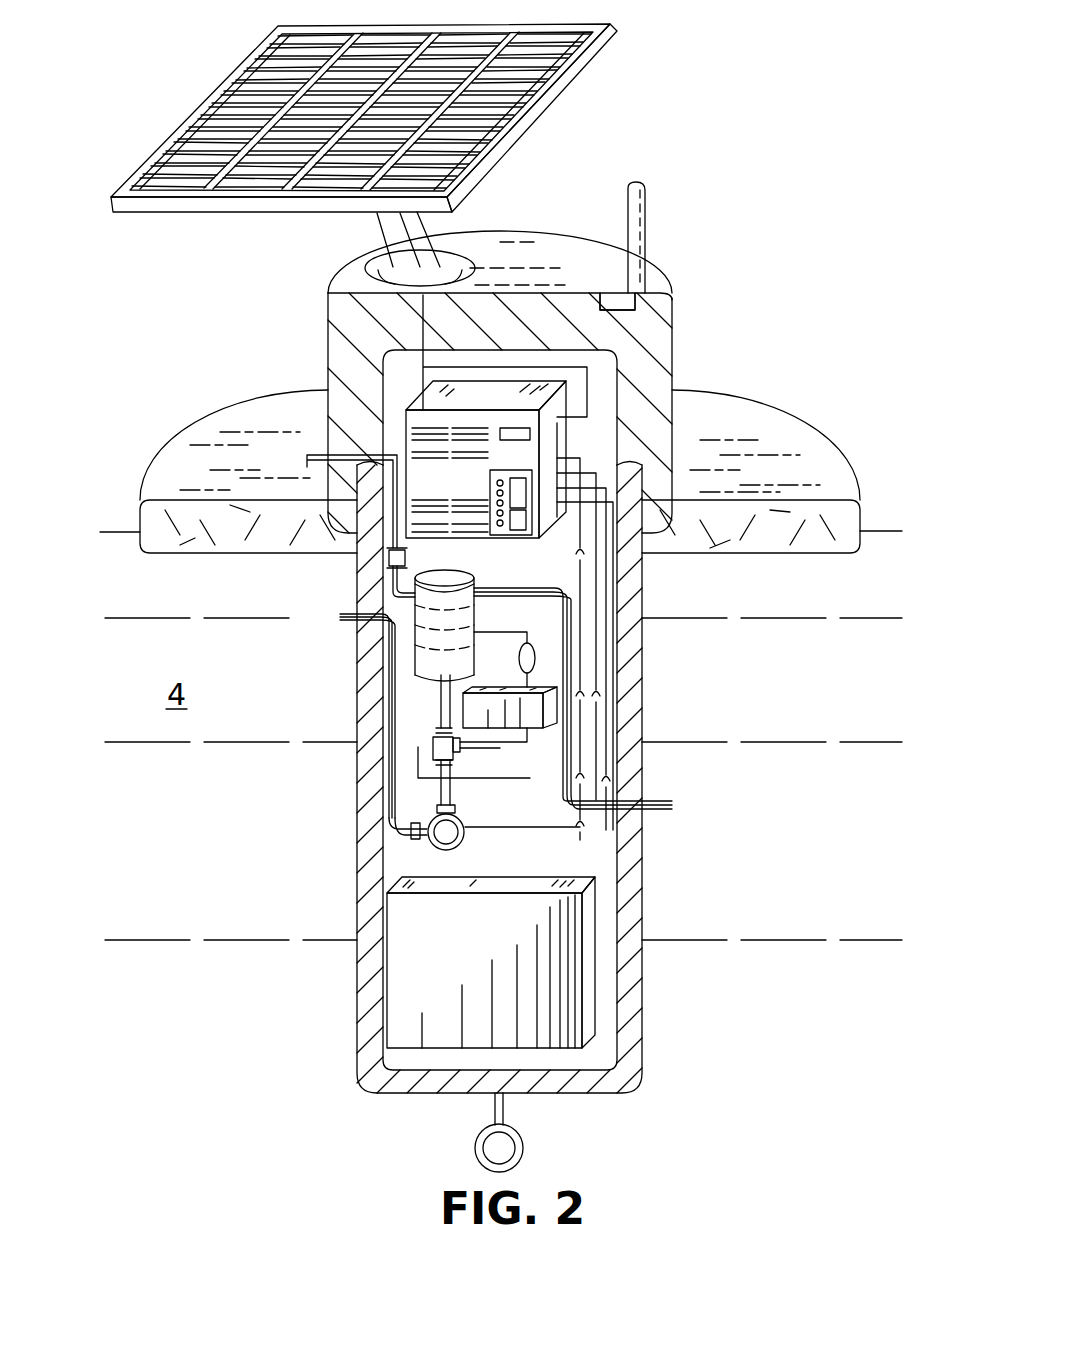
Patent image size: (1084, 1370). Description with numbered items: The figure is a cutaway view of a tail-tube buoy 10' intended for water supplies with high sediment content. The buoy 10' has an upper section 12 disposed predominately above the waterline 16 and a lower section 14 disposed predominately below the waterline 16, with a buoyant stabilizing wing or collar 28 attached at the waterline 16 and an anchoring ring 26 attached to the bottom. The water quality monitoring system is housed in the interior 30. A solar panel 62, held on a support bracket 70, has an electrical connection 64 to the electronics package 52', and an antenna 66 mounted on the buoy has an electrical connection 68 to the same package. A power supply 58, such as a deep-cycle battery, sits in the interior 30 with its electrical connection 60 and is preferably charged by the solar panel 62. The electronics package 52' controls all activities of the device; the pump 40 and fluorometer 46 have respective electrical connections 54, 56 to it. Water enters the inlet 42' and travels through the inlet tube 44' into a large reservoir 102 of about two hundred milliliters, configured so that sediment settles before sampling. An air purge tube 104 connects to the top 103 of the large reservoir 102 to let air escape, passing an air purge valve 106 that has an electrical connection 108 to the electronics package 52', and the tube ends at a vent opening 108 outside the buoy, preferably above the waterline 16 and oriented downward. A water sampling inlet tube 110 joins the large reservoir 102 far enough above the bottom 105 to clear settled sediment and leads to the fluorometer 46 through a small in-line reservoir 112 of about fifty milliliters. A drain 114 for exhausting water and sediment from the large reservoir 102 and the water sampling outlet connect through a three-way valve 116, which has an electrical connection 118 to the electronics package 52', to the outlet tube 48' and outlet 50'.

The tail-tube buoy 10' is at (847, 267).
The upper section 12 is at (673, 368).
The lower section 14 is at (648, 725).
The waterline 16 is at (118, 530).
The anchoring ring 26 is at (525, 1148).
The buoyant stabilizing wing or collar 28 is at (265, 402).
The interior 30 is at (395, 852).
The pump 40 is at (455, 822).
The inlet 42' is at (694, 823).
The inlet tube 44' is at (662, 649).
The fluorometer 46 is at (543, 730).
The outlet tube 48' is at (348, 814).
The outlet 50' is at (325, 707).
The electronics package 52' is at (398, 429).
The electrical connection 54 is at (518, 827).
The electrical connection 56 is at (605, 641).
The power supply 58 is at (605, 945).
The electrical connection 60 is at (585, 868).
The solar panel 62 is at (193, 212).
The electrical connection 64 is at (385, 313).
The antenna 66 is at (648, 203).
The electrical connection 68 is at (640, 305).
The support bracket 70 is at (445, 225).
The large reservoir 102 is at (415, 640).
The top 103 is at (478, 582).
The air purge tube 104 is at (315, 450).
The bottom 105 is at (440, 690).
The air purge valve 106 is at (390, 558).
The vent opening 108 is at (307, 468).
The water sampling inlet tube 110 is at (490, 630).
The small in-line reservoir 112 is at (535, 655).
The drain 114 is at (440, 715).
The three-way valve 116 is at (527, 748).
The electrical connection 118 is at (605, 770).